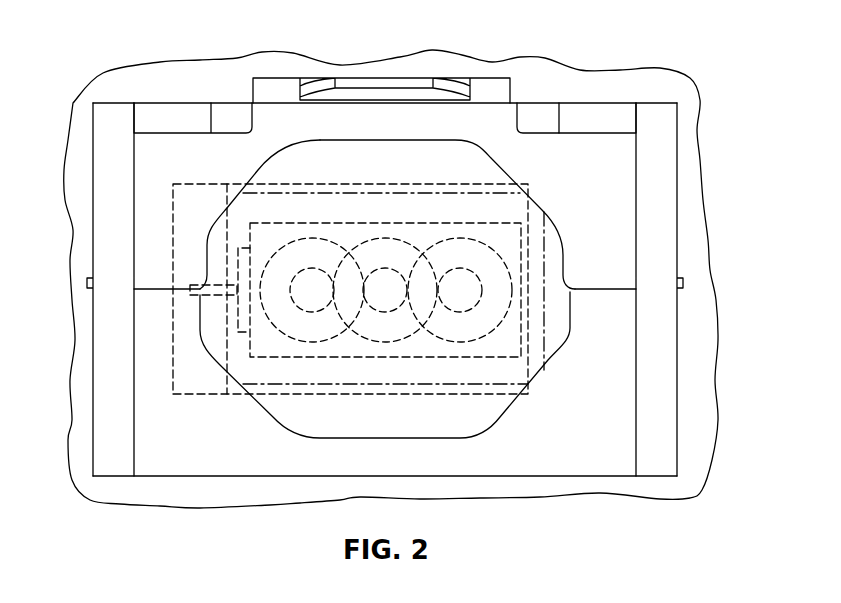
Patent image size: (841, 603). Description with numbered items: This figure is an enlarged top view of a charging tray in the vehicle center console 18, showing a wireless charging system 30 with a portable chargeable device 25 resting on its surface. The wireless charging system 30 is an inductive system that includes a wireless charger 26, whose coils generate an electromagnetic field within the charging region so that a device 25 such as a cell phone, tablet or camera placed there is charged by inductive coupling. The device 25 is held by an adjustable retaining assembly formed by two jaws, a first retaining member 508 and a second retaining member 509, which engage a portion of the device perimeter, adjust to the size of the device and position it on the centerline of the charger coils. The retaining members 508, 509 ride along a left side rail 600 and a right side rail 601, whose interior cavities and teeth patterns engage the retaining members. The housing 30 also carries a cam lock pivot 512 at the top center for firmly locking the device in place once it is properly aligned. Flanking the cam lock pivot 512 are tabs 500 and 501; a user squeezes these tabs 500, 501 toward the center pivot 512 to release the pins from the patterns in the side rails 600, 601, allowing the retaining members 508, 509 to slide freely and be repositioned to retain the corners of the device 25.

The center console 18 is at (690, 223).
The portable chargeable device 25 is at (440, 192).
The wireless charger 26 is at (530, 329).
The wireless charging system 30 is at (601, 96).
The tab 500 is at (232, 115).
The tab 501 is at (540, 113).
The first retaining member 508 is at (603, 187).
The second retaining member 509 is at (605, 408).
The cam lock pivot 512 is at (392, 75).
The left side rail 600 is at (108, 412).
The right side rail 601 is at (660, 440).